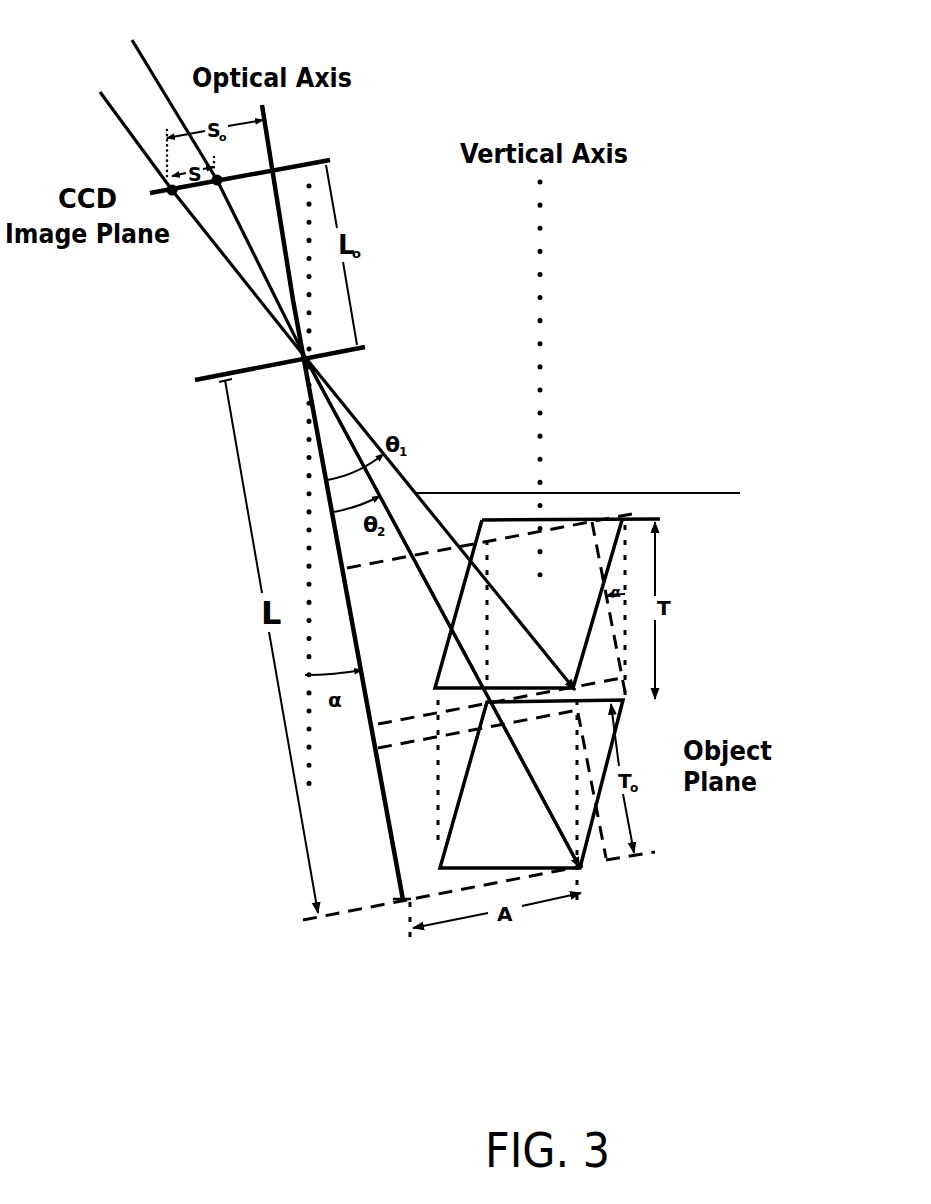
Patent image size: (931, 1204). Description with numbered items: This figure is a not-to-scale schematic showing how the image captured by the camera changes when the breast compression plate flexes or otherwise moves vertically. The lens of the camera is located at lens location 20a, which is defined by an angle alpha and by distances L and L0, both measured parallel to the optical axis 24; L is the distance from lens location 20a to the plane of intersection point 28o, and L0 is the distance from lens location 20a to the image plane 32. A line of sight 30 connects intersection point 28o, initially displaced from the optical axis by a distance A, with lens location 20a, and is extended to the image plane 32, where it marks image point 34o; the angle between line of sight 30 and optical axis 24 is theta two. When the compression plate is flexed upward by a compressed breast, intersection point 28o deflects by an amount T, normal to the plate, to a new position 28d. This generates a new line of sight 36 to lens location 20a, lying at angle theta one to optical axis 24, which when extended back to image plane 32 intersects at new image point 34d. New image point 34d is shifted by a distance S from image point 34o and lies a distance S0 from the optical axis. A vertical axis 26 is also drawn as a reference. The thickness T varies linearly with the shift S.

The lens location 20a is at (305, 358).
The optical axis 24 is at (392, 844).
The vertical axis 26 is at (306, 721).
The intersection point 28o is at (580, 868).
The new position of intersection point 28d is at (575, 690).
The line of sight 30 is at (400, 534).
The image plane 32 is at (308, 163).
The image point 34o is at (346, 438).
The new image point 34d is at (329, 374).
The new line of sight 36 is at (596, 494).